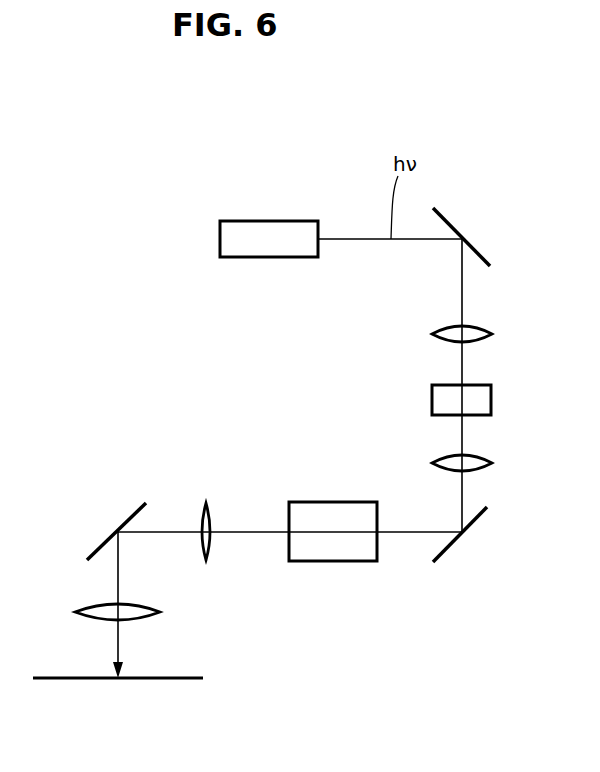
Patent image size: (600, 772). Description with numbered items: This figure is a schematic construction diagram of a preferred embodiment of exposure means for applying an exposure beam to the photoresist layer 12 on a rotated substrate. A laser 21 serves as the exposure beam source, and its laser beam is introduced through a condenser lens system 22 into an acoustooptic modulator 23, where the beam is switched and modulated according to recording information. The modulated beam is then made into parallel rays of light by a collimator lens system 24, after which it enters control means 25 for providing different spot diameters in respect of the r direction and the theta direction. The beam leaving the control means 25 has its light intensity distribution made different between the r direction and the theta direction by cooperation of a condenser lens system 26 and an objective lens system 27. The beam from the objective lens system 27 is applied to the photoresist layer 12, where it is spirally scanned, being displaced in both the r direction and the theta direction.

The photoresist layer 12 is at (164, 677).
The laser 21 is at (267, 221).
The condenser lens system 22 is at (480, 327).
The acoustooptic modulator 23 is at (491, 400).
The collimator lens system 24 is at (485, 452).
The control means 25 is at (348, 561).
The condenser lens system 26 is at (211, 511).
The objective lens system 27 is at (89, 603).